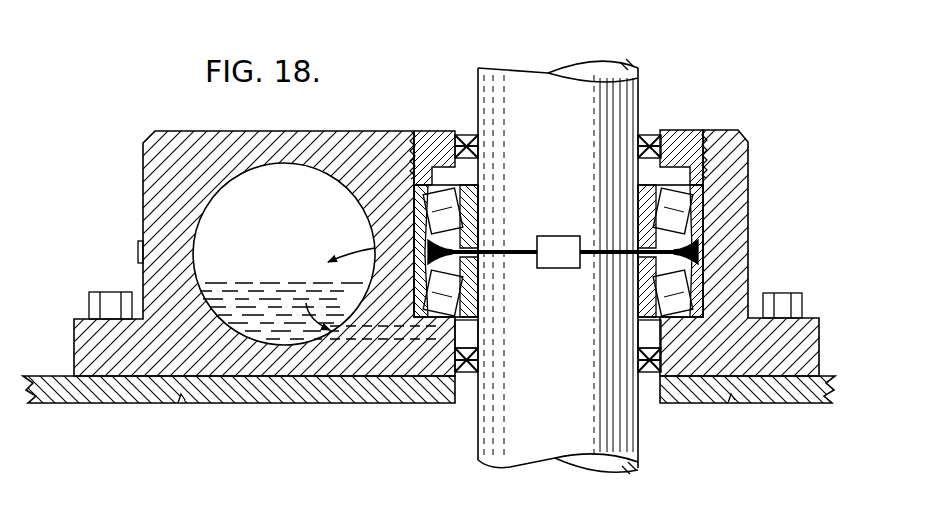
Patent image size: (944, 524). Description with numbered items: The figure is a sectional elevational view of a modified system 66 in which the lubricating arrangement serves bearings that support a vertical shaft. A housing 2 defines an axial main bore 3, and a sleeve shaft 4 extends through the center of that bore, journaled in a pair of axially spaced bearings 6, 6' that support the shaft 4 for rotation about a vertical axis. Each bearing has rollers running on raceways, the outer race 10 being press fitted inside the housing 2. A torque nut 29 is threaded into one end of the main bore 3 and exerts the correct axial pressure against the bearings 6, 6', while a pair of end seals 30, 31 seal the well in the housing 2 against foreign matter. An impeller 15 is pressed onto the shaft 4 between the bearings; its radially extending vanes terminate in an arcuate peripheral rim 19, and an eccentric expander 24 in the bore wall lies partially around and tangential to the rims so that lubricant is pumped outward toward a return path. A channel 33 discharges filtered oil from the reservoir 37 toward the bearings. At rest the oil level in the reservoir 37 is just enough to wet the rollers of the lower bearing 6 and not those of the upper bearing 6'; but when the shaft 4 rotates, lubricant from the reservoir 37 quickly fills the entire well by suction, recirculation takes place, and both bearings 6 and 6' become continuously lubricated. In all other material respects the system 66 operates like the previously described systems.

The housing 2 is at (205, 130).
The sleeve shaft 4 is at (497, 88).
The end seal 31 is at (470, 140).
The modified system 66 is at (652, 100).
The torque nut 29 is at (690, 131).
The bearing 6' is at (478, 199).
The impeller 15 is at (516, 249).
The outer race 10 is at (703, 202).
The expander 24 is at (716, 248).
The peripheral rim 19 is at (713, 254).
The main bore 3 is at (697, 290).
The bearing 6 is at (474, 293).
The end seal 30 is at (646, 360).
The channel 33 is at (386, 335).
The reservoir 37 is at (296, 225).